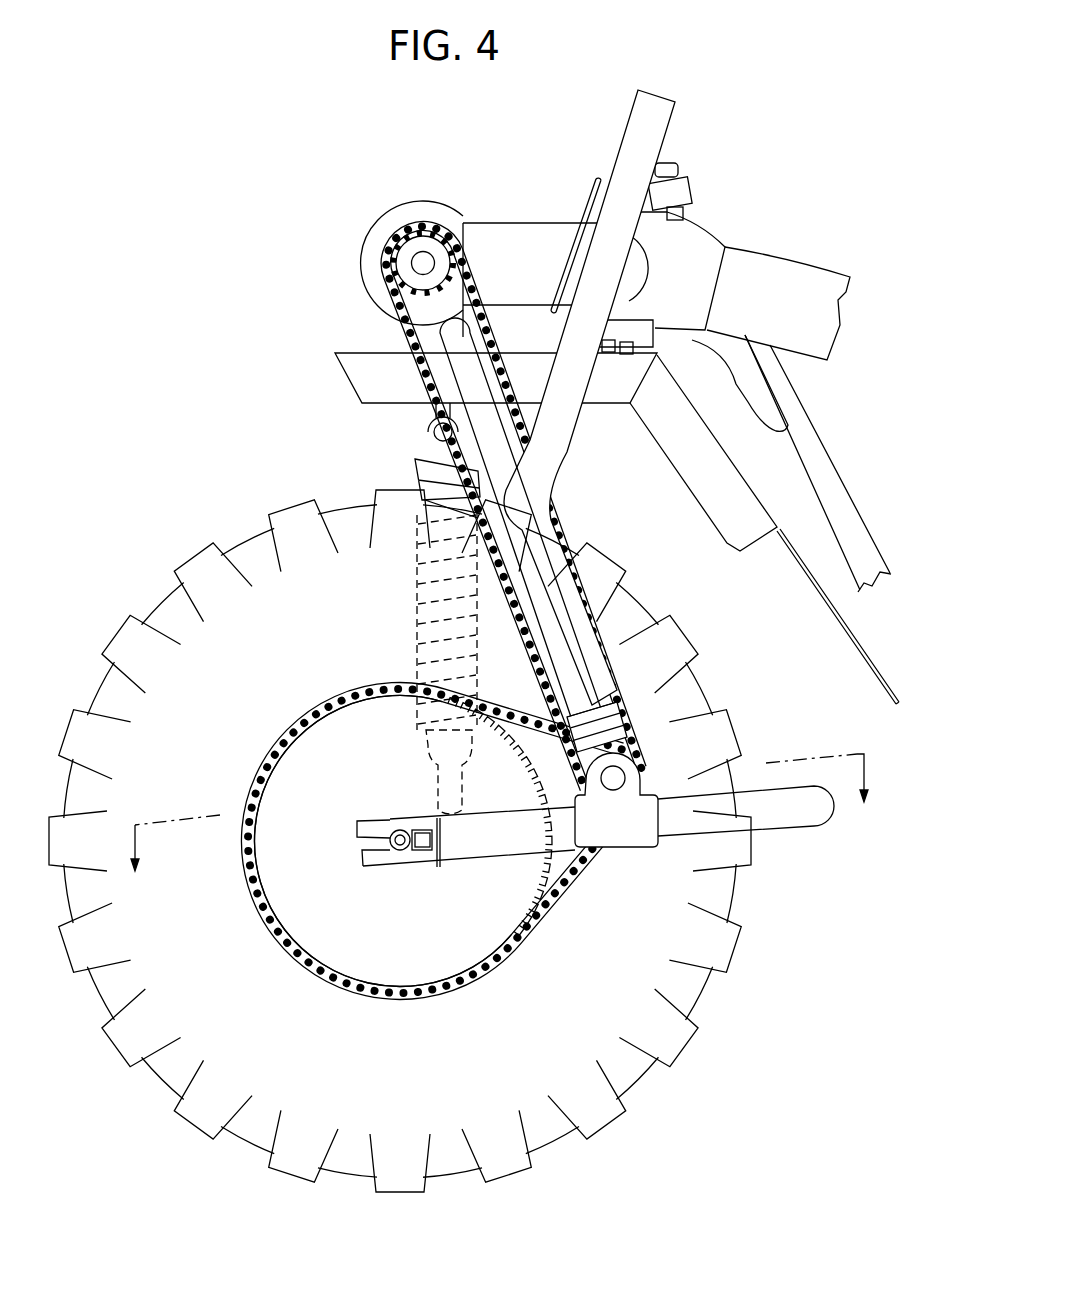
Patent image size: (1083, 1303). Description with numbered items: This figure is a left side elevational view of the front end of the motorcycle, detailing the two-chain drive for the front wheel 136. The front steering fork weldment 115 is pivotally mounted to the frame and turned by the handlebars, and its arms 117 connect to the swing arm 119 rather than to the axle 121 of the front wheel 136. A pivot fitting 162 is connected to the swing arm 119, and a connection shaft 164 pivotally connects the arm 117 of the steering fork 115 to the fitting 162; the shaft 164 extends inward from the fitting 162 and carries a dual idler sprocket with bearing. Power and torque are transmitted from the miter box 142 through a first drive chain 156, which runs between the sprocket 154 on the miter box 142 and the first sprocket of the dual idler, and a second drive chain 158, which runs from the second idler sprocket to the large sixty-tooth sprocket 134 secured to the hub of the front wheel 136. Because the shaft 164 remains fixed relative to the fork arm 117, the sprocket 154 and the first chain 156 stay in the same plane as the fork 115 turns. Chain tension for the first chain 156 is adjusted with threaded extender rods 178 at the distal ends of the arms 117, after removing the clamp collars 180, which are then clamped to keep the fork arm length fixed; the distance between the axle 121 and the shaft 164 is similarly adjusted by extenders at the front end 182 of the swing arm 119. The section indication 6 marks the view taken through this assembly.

The steering fork weldment 115 is at (632, 142).
The arm of the steering fork 117 is at (548, 572).
The swing arm 119 is at (812, 812).
The axle 121 is at (395, 833).
The large sprocket 134 is at (455, 957).
The front wheel 136 is at (246, 540).
The miter box 142 is at (414, 200).
The sprocket 154 is at (388, 262).
The first drive chain 156 is at (410, 348).
The second drive chain 158 is at (555, 903).
The pivot fitting 162 is at (630, 835).
The connection shaft 164 is at (620, 776).
The extender rod 178 is at (626, 712).
The clamp collar 180 is at (597, 700).
The front end of the swing arm 182 is at (437, 860).
The section line 6- 6 is at (501, 830).